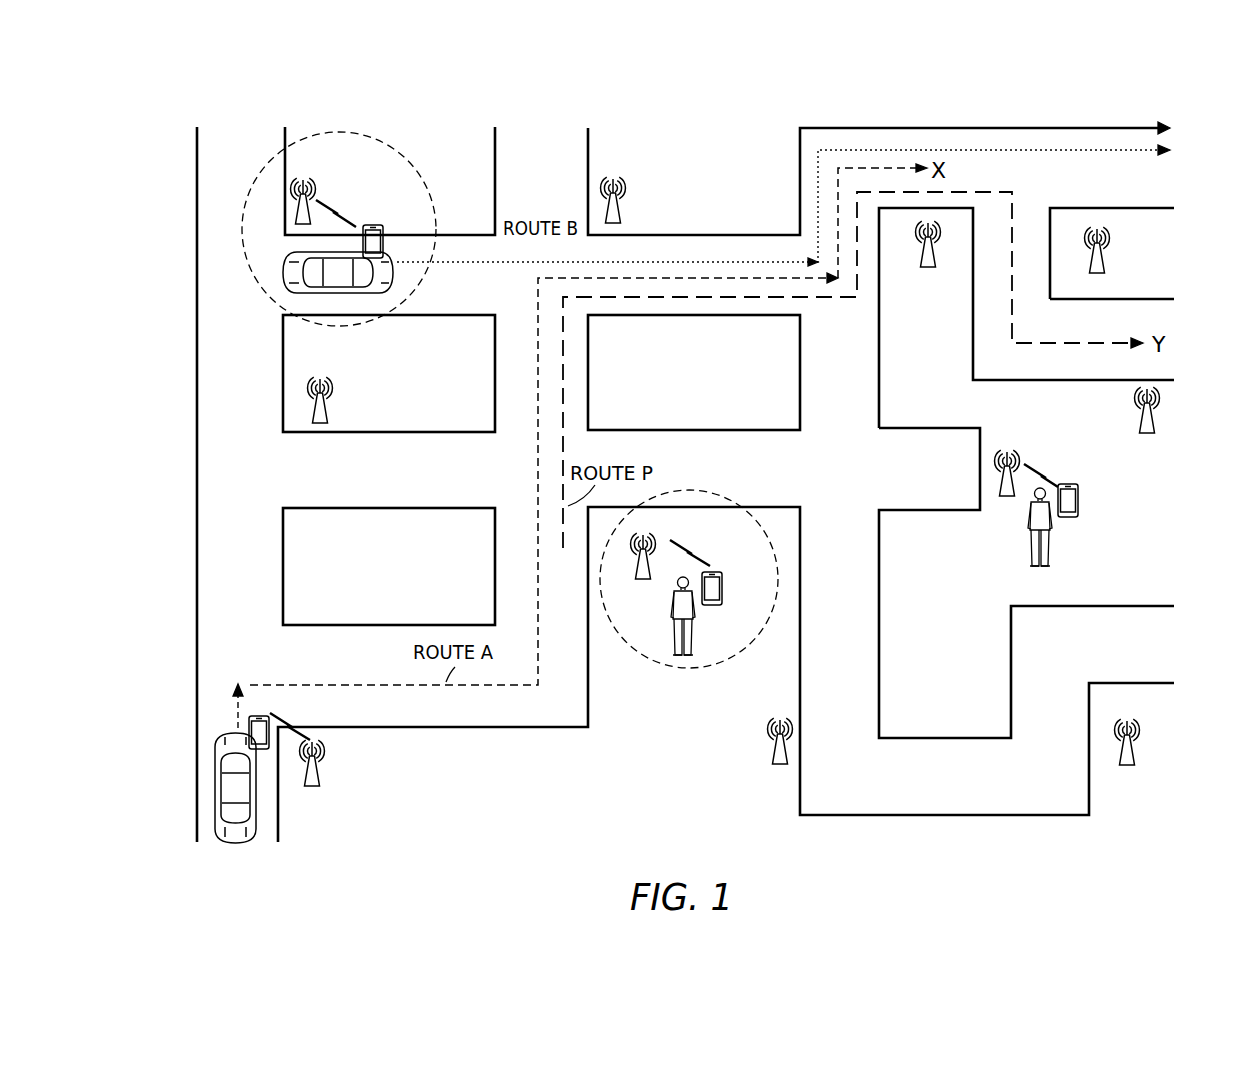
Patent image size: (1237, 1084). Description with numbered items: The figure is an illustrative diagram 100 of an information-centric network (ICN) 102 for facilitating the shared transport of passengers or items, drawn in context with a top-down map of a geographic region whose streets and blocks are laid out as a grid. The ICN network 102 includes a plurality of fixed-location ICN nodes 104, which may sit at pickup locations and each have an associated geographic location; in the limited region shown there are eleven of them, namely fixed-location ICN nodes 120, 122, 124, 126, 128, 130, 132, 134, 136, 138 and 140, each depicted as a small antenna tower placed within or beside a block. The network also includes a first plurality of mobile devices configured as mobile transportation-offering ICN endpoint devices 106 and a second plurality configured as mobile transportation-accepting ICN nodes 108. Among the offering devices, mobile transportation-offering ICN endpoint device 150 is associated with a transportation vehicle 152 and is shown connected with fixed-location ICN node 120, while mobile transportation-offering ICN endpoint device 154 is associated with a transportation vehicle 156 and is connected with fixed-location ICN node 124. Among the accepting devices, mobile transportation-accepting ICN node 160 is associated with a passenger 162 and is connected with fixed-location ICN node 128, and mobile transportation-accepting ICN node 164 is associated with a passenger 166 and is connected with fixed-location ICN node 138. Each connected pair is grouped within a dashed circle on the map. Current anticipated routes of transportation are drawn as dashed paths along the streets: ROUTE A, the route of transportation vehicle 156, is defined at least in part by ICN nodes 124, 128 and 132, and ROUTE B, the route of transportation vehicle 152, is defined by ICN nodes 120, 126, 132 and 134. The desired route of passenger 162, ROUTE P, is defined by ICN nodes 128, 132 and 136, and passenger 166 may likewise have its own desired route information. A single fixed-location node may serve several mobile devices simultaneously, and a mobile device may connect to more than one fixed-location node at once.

The illustrative diagram 100 is at (650, 778).
The information-centric network (ICN) 102 is at (436, 150).
The fixed-location ICN nodes 104 is at (612, 162).
The mobile transportation-offering ICN endpoint devices 106 is at (405, 248).
The mobile transportation-accepting ICN nodes 108 is at (717, 528).
The fixed-location ICN node 120 is at (316, 202).
The fixed-location ICN node 122 is at (322, 380).
The fixed-location ICN node 124 is at (311, 789).
The fixed-location ICN node 126 is at (621, 213).
The fixed-location ICN node 128 is at (641, 581).
The fixed-location ICN node 130 is at (771, 752).
The fixed-location ICN node 132 is at (928, 268).
The fixed-location ICN node 134 is at (1106, 262).
The fixed-location ICN node 136 is at (1154, 422).
The fixed-location ICN node 138 is at (1005, 500).
The fixed-location ICN node 140 is at (1135, 757).
The mobile transportation-offering ICN endpoint device 150 is at (376, 222).
The transportation vehicle 152 is at (284, 278).
The mobile transportation-offering ICN endpoint device 154 is at (261, 718).
The transportation vehicle 156 is at (238, 845).
The mobile transportation-accepting ICN node 160 is at (725, 591).
The passenger 162 is at (695, 628).
The mobile transportation-accepting ICN node 164 is at (1080, 494).
The passenger 166 is at (1051, 546).